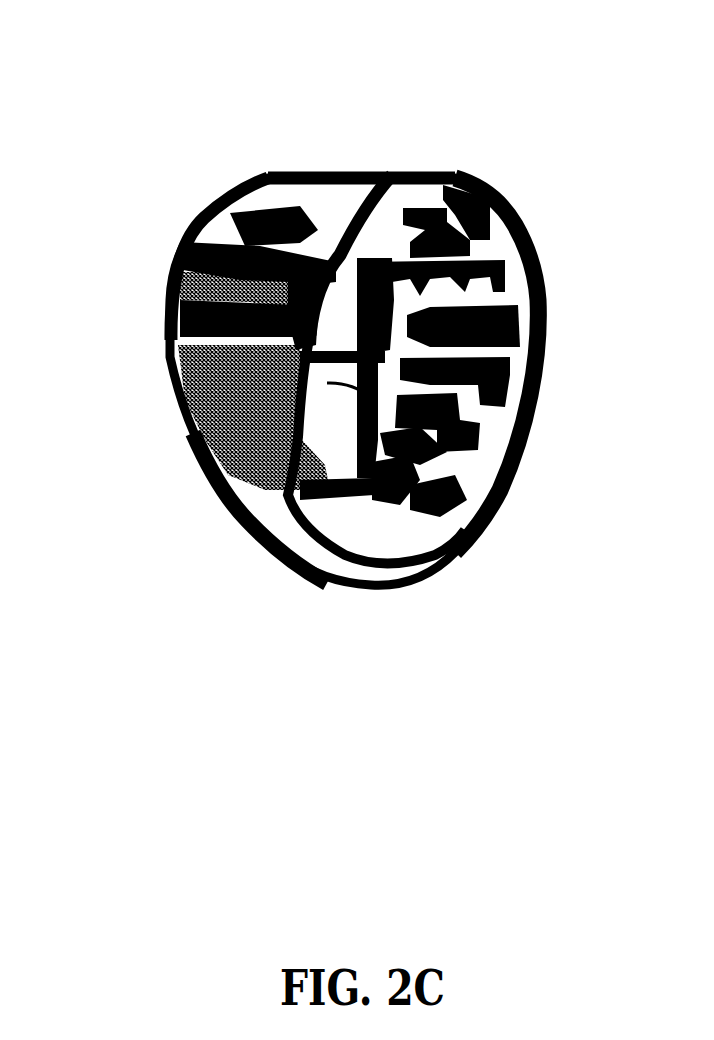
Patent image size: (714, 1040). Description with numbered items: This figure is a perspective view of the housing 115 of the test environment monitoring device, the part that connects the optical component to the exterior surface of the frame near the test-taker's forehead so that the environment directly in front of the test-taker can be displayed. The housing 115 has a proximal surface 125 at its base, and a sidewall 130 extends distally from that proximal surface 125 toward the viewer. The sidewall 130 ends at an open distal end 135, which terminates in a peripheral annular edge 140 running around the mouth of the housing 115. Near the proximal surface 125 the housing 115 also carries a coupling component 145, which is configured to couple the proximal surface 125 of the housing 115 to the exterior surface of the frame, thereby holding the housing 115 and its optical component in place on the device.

The housing 115 is at (563, 88).
The proximal surface 125 is at (192, 440).
The sidewall 130 is at (235, 298).
The open distal end 135 is at (571, 360).
The peripheral annular edge 140 is at (546, 302).
The coupling component 145 is at (372, 398).